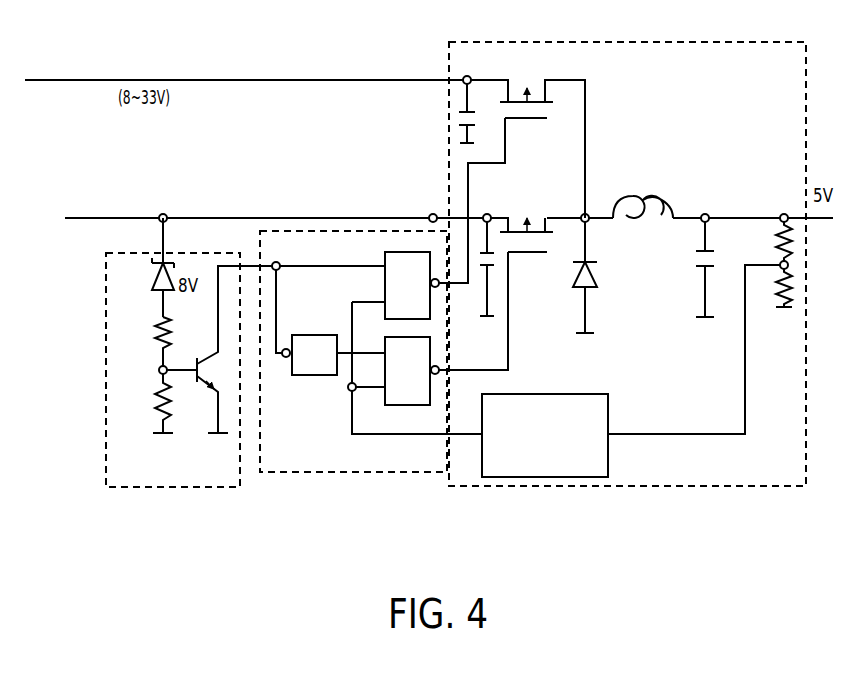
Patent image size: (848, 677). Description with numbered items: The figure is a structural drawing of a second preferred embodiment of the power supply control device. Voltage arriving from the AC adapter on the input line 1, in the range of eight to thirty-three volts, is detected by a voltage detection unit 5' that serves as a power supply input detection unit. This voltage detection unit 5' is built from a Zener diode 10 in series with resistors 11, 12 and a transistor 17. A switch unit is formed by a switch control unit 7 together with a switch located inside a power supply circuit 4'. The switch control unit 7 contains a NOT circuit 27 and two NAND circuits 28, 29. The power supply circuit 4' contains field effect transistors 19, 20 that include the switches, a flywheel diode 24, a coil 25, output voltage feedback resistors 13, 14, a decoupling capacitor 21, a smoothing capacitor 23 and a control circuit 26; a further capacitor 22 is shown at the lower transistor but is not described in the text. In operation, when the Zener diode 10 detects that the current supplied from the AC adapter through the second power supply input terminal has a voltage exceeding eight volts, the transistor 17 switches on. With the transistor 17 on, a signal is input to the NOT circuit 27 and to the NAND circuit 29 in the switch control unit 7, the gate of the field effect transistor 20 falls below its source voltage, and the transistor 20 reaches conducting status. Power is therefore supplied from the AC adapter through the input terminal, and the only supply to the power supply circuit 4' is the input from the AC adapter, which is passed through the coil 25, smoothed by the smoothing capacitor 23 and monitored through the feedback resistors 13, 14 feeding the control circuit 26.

The input power supply line (8-33V) 1 is at (90, 80).
The power supply circuit 4' is at (627, 293).
The voltage detection unit 5' is at (173, 399).
The switch control unit 7 is at (343, 473).
The Zener diode 10 is at (150, 287).
The resistor 11 is at (155, 323).
The resistor 12 is at (155, 390).
The output voltage feedback resistor 13 is at (776, 252).
The output voltage feedback resistor 14 is at (775, 298).
The transistor 17 is at (189, 394).
The field effect transistor 19 is at (542, 57).
The field effect transistor 20 is at (542, 203).
The decoupling capacitor 21 is at (452, 114).
The capacitor 22 is at (480, 274).
The smoothing capacitor 23 is at (690, 257).
The flywheel diode 24 is at (575, 291).
The coil 25 is at (660, 196).
The control circuit 26 is at (608, 414).
The NOT circuit 27 is at (313, 377).
The NAND circuit 28 is at (385, 256).
The NAND circuit 29 is at (410, 406).